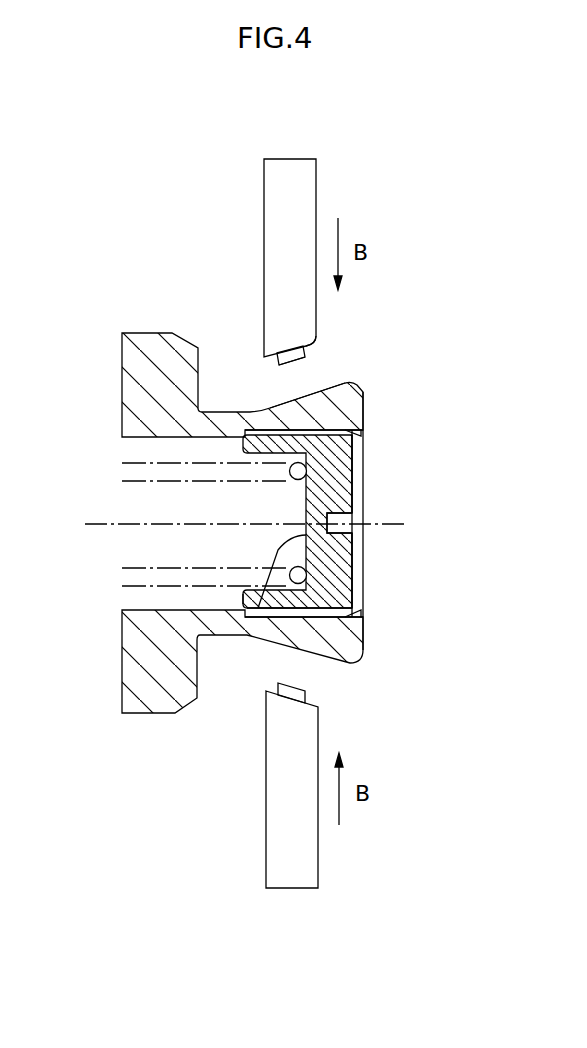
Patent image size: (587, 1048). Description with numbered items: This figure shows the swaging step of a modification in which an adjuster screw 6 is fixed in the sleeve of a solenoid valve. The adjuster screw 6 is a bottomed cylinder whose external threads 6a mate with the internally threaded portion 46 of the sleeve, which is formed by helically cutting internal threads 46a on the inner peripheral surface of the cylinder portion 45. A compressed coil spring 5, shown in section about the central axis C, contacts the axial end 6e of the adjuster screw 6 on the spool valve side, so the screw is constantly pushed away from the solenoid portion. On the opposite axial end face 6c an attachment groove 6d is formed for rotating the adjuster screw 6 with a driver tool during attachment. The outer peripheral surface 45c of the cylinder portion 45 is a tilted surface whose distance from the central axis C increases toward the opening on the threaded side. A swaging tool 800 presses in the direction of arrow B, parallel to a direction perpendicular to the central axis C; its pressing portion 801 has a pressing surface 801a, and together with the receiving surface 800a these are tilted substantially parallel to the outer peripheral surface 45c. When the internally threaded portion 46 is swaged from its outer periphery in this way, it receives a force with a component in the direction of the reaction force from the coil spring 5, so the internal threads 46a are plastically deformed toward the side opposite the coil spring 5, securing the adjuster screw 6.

The coil spring 5 is at (135, 577).
The adjuster screw 6 is at (342, 460).
The external threads 6a is at (314, 600).
The axial end face 6c is at (353, 485).
The attachment groove 6d is at (342, 532).
The axial end 6e is at (258, 608).
The cylinder portion 45 is at (372, 382).
The outer peripheral surface 45c is at (287, 402).
The internally threaded portion 46 is at (367, 428).
The internal threads 46a is at (357, 615).
The swaging tool 800 is at (317, 175).
The receiving surface 800a is at (311, 340).
The pressing portion 801 is at (305, 350).
The pressing surface 801a is at (290, 358).
The central axis C is at (100, 523).